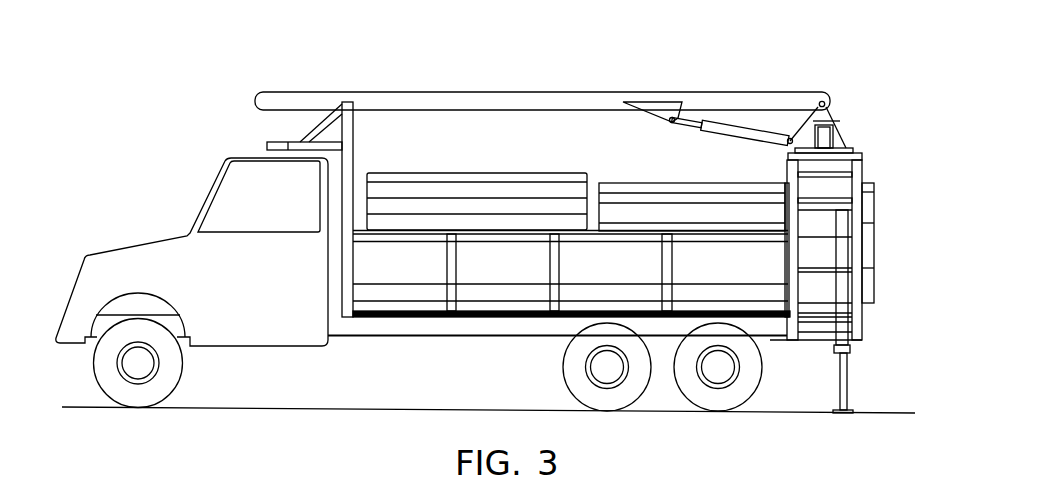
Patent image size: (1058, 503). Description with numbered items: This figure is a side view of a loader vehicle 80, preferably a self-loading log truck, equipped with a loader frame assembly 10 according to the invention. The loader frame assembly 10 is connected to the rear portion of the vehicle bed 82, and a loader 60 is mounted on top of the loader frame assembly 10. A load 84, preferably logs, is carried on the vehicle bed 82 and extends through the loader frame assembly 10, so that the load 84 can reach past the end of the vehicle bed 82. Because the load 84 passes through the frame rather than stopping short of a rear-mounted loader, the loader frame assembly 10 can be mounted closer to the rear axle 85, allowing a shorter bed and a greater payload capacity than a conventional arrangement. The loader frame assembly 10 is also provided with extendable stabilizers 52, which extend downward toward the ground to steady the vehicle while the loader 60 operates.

The loader frame assembly 10 is at (882, 162).
The extendable stabilizers 52 is at (857, 387).
The loader 60 is at (723, 82).
The loader vehicle 80 is at (170, 208).
The vehicle bed 82 is at (412, 292).
The load 84 is at (892, 272).
The rear axle 85 is at (722, 368).